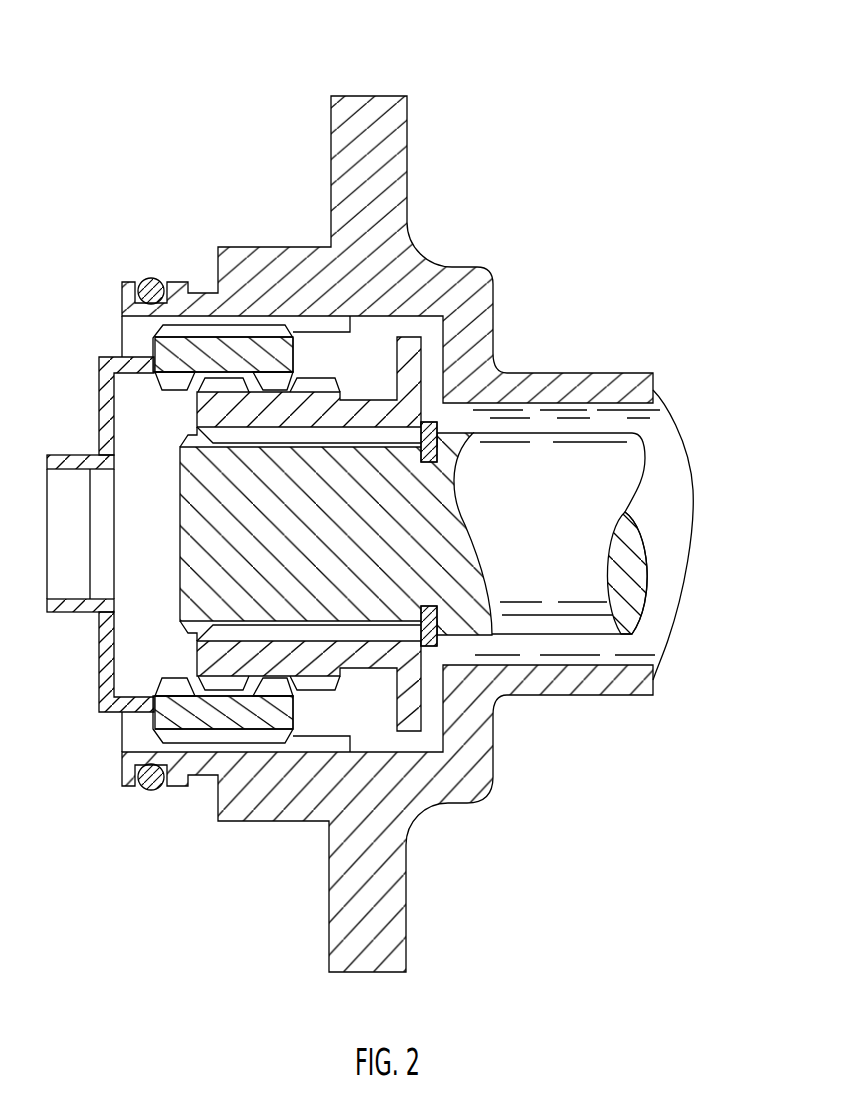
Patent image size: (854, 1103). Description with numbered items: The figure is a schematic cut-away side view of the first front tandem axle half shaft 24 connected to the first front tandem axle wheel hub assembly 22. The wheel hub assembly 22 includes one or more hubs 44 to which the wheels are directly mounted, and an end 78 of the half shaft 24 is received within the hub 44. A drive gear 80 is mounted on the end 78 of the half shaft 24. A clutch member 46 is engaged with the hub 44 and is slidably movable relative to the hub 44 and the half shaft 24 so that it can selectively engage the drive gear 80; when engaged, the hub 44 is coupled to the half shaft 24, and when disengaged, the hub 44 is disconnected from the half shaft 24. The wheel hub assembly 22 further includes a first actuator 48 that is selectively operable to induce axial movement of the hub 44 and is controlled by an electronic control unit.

The first front tandem axle wheel hub assembly 22 is at (370, 499).
The first front tandem axle half shaft 24 is at (571, 535).
The hub 44 is at (382, 217).
The clutch member 46 is at (237, 348).
The first actuator 48 is at (108, 652).
The end of the first front tandem axle half shaft 78 is at (178, 517).
The drive gear 80 is at (278, 403).